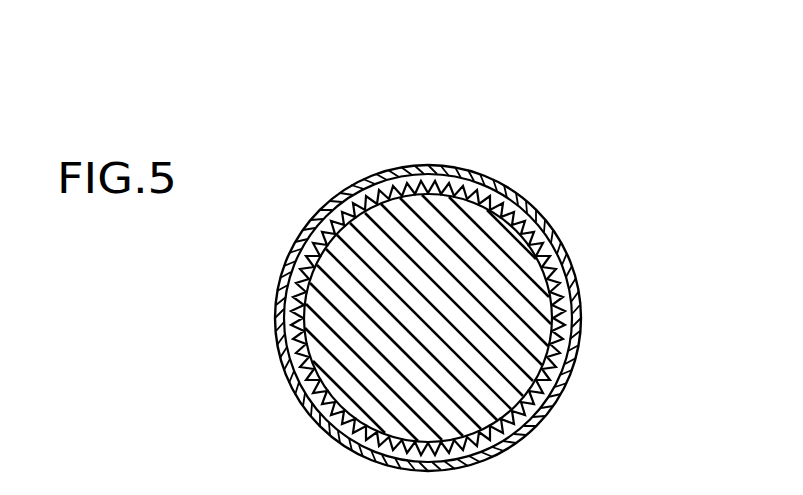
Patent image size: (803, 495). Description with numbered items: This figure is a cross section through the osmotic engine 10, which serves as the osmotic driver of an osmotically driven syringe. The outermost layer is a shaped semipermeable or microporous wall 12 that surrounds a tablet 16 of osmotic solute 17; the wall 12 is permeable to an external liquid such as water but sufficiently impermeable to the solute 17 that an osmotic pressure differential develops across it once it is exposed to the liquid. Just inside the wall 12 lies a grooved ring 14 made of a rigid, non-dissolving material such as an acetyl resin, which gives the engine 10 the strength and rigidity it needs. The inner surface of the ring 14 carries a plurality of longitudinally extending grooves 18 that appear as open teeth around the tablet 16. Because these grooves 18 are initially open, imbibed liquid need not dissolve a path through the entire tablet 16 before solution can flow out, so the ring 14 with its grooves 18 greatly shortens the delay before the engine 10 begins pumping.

The osmotic engine 10 is at (557, 204).
The semipermeable wall 12 is at (578, 271).
The grooved ring 14 is at (562, 333).
The tablet 16 is at (305, 290).
The osmotic solute 17 is at (380, 257).
The longitudinally extending grooves 18 is at (293, 362).